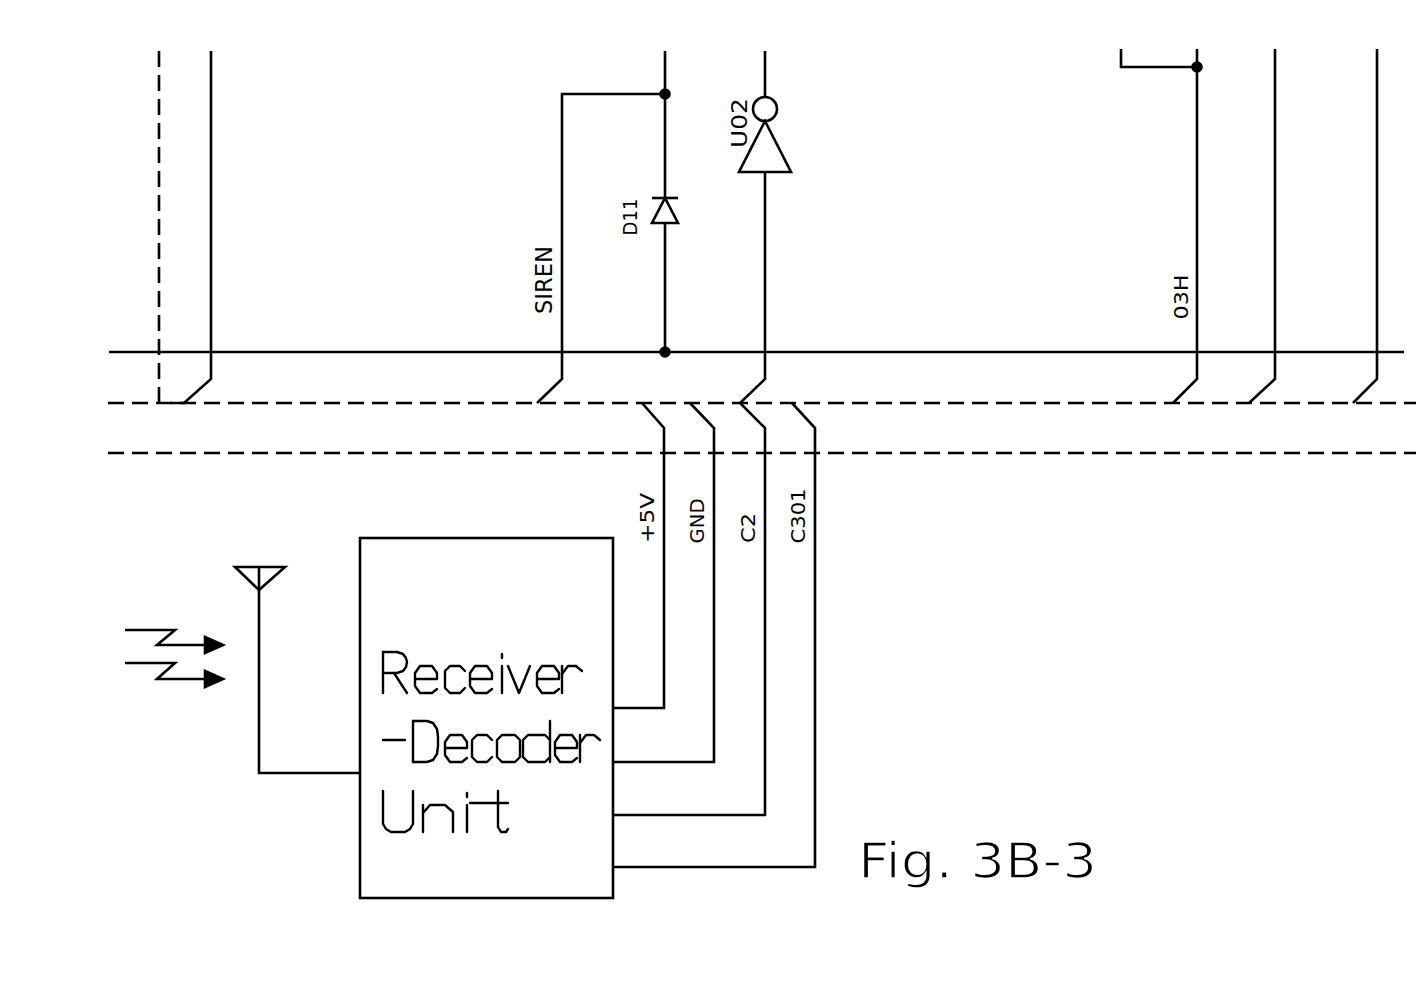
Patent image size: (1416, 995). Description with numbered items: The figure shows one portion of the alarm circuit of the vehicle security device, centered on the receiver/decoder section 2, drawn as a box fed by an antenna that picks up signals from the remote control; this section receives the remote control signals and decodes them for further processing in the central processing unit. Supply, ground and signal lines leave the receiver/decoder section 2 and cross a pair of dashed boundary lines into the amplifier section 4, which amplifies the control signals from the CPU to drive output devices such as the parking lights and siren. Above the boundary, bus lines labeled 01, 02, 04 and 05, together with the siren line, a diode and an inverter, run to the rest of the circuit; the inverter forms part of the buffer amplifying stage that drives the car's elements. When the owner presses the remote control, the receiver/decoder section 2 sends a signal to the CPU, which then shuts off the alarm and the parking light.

The receiver/decoder section 2 is at (486, 718).
The amplifier section 4 is at (762, 465).
The bus line 01 is at (190, 227).
The bus line 02 with inverter U02 02 is at (702, 433).
The bus line 04 is at (1259, 226).
The bus line 05 is at (1362, 226).